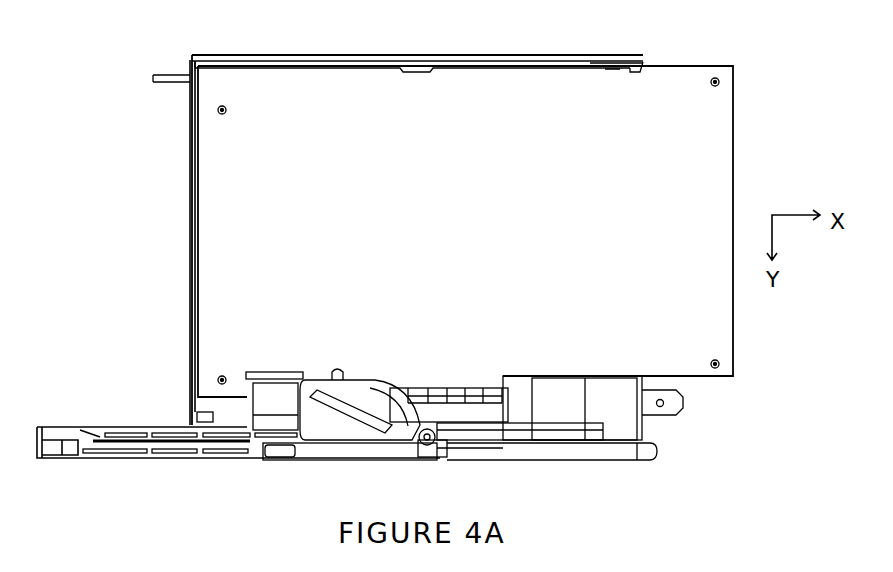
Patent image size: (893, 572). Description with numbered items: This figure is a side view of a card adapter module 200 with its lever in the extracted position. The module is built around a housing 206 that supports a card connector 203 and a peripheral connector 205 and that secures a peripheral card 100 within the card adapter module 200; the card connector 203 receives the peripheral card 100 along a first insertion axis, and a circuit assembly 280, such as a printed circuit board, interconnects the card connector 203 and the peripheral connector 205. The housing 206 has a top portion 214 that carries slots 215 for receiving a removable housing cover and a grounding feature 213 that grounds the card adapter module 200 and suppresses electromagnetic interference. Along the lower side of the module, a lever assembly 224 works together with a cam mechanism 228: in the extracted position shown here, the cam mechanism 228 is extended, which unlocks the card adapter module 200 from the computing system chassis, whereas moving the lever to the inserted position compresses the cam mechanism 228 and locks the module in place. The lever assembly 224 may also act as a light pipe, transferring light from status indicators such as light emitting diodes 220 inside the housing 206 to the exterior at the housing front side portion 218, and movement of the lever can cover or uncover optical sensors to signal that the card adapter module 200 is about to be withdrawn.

The card adapter module 200 is at (96, 44).
The peripheral card 100 is at (729, 135).
The grounding feature 213 is at (250, 50).
The housing top portion 214 is at (411, 52).
The slots 215 is at (757, 25).
The housing front side portion 218 is at (188, 123).
The light emitting diodes 220 is at (205, 410).
The lever assembly 224 is at (97, 458).
The cam mechanism 228 is at (428, 460).
The card connector 203 is at (488, 410).
The circuit assembly 280 is at (547, 432).
The housing 206 is at (618, 455).
The peripheral connector 205 is at (627, 415).